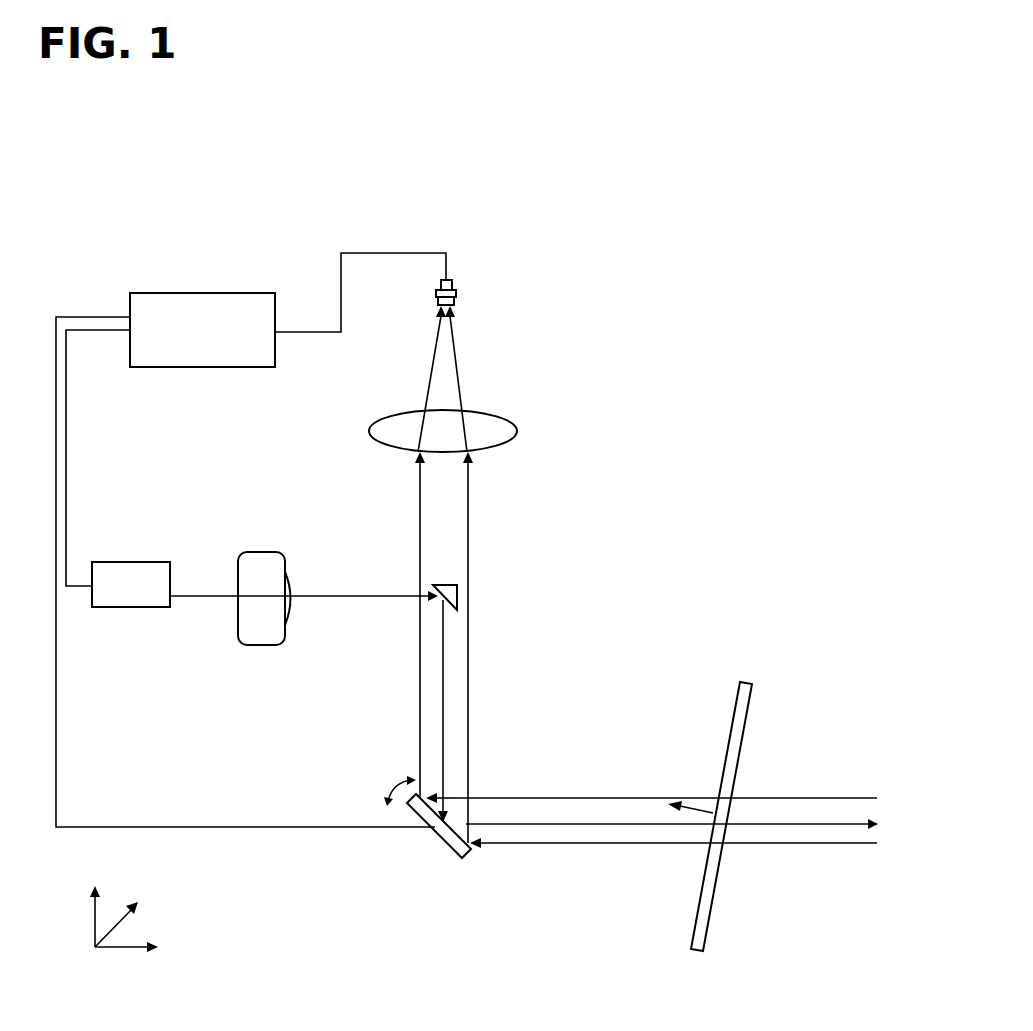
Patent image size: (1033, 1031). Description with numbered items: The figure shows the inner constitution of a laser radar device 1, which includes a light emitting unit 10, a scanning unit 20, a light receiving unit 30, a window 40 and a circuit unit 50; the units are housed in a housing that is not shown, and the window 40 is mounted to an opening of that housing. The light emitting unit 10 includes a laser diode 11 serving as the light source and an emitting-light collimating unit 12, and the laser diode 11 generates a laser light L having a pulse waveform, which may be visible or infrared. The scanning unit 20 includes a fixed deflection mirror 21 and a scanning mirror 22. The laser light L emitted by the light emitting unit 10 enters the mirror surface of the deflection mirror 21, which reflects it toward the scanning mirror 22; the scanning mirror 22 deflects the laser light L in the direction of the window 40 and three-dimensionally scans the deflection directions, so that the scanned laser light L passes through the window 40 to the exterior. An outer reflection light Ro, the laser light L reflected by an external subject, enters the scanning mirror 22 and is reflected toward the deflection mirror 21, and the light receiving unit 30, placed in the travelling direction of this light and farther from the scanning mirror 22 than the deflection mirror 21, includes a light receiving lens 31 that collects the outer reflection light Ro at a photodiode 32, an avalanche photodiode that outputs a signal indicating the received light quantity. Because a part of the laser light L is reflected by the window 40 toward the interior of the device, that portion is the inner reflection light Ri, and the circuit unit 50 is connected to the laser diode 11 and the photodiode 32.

The laser radar device 1 is at (214, 192).
The light emitting unit 10 is at (219, 505).
The laser diode 11 is at (150, 561).
The emitting-light collimating unit 12 is at (268, 551).
The scanning unit 20 is at (563, 542).
The deflection mirror 21 is at (440, 583).
The scanning mirror 22 is at (437, 833).
The light receiving unit 30 is at (562, 285).
The light receiving lens 31 is at (503, 414).
The photodiode 32 is at (456, 284).
The window 40 is at (700, 882).
The circuit unit 50 is at (251, 292).
The laser light L is at (350, 595).
The inner reflection light Ri is at (703, 806).
The outer reflection light Ro is at (774, 797).